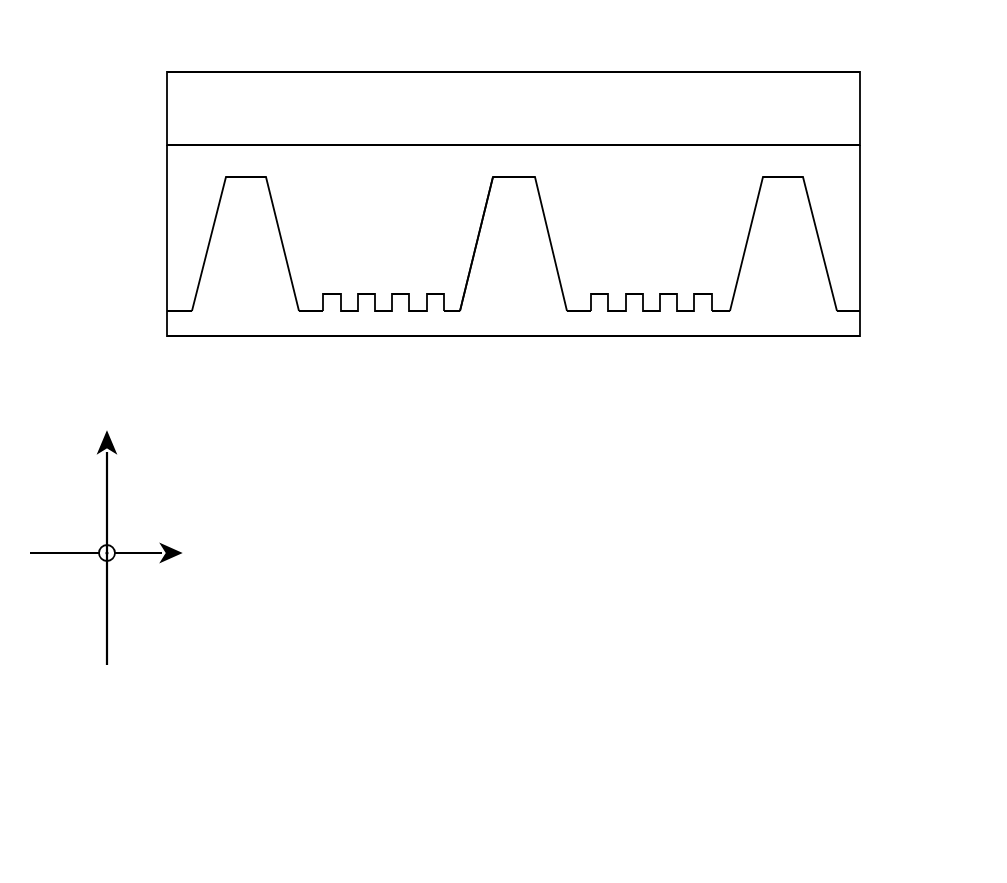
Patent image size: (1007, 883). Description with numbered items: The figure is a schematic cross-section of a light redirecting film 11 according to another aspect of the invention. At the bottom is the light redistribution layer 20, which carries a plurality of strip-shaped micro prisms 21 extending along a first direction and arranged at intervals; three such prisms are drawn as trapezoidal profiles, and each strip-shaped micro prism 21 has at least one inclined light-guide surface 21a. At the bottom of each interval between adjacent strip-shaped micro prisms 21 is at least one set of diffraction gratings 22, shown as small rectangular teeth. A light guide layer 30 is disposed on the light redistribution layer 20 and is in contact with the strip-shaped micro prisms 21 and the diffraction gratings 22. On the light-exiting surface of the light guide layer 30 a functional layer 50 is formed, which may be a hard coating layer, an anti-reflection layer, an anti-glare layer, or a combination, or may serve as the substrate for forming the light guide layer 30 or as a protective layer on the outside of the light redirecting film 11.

The light redirecting film 11 is at (140, 72).
The light redistribution layer 20 is at (845, 322).
The strip-shaped micro prism 21 is at (249, 205).
The inclined light-guide surface 21a is at (477, 237).
The diffraction grating 22 is at (368, 302).
The light guide layer 30 is at (845, 177).
The functional layer 50 is at (842, 106).